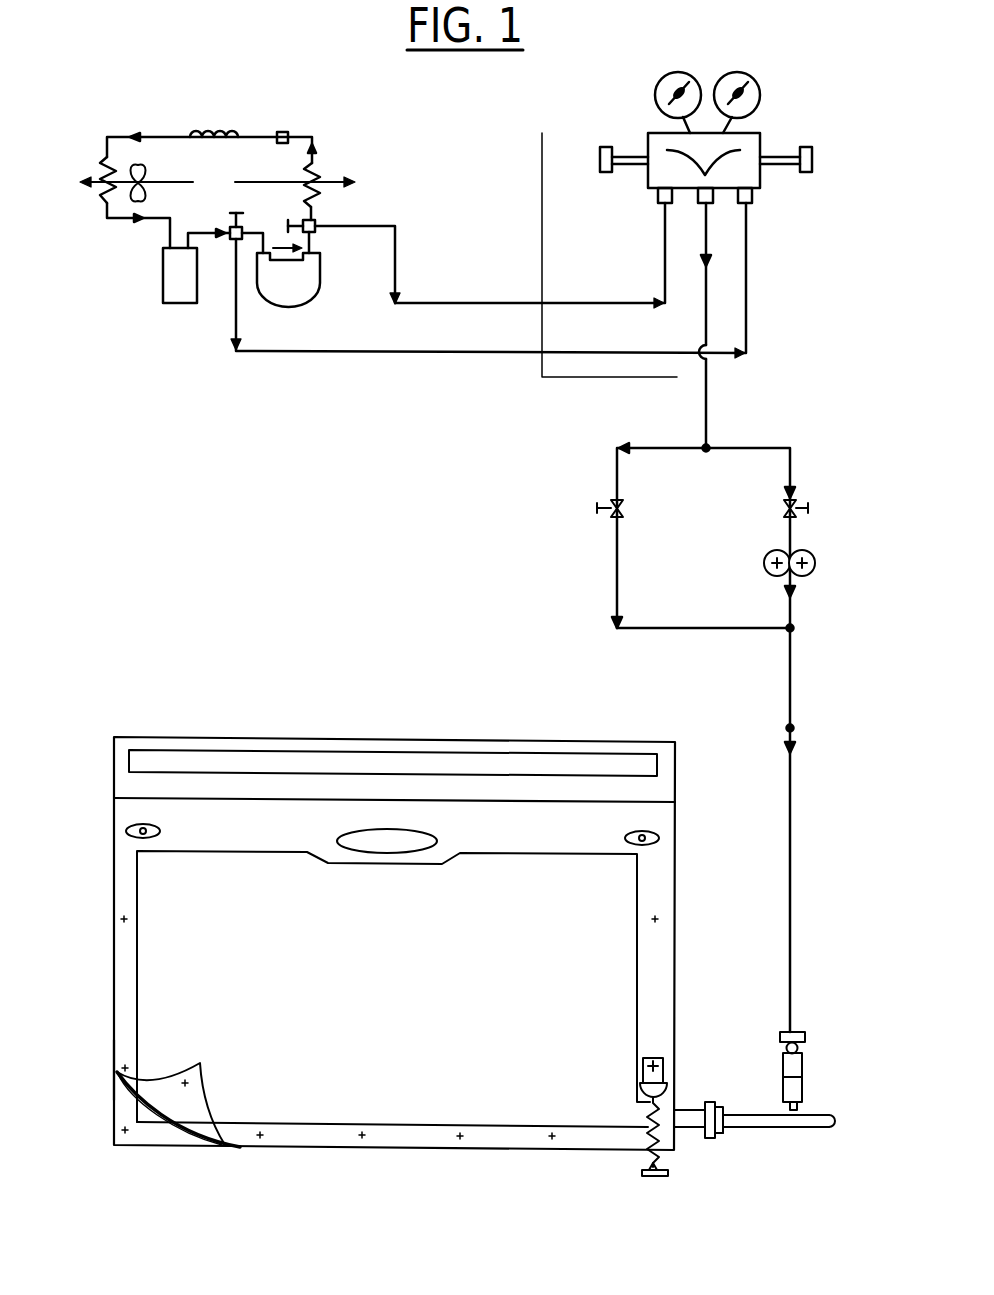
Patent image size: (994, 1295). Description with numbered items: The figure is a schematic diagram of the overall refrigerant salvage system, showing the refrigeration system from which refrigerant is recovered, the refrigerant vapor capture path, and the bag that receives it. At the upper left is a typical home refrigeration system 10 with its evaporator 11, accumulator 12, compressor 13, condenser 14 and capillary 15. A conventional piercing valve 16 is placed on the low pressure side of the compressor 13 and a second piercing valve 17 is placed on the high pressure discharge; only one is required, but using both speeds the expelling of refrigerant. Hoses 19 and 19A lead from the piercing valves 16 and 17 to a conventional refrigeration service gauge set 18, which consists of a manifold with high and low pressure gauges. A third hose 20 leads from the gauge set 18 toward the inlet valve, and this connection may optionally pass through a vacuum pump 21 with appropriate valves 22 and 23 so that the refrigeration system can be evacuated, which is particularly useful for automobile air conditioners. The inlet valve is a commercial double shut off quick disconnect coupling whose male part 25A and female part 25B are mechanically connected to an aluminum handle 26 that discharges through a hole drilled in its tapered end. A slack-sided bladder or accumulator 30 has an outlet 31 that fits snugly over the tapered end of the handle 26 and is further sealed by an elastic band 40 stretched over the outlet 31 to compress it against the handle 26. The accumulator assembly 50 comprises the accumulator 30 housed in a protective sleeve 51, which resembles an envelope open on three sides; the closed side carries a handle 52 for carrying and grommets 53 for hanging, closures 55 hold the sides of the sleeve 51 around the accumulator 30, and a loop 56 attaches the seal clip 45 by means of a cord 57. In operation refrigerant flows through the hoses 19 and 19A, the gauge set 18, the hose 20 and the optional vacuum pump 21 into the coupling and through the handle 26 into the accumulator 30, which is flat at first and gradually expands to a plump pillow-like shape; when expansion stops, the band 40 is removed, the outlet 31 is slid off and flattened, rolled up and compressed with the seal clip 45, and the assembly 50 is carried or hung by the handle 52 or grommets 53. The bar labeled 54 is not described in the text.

The refrigeration system 10 is at (114, 114).
The evaporator 11 is at (105, 150).
The accumulator 12 is at (180, 275).
The compressor 13 is at (288, 275).
The condenser 14 is at (304, 170).
The capillary 15 is at (239, 115).
The piercing valve 16 is at (233, 244).
The piercing valve 17 is at (316, 218).
The refrigeration service gauge set 18 is at (762, 188).
The hose 19 is at (488, 280).
The hose 19A is at (490, 255).
The third hose 20 is at (703, 617).
The vacuum pump 21 is at (764, 563).
The valve 22 is at (623, 508).
The valve 23 is at (784, 508).
The male part 25A is at (805, 1062).
The female part 25B is at (807, 1088).
The aluminum handle 26 is at (840, 1119).
The slack-sided accumulator 30 is at (178, 1123).
The outlet 31 is at (770, 1144).
The elastic band 40 is at (737, 1100).
The seal clip 45 is at (668, 1176).
The accumulator assembly 50 is at (374, 910).
The protective sleeve 51 is at (424, 1033).
The handle 52 is at (387, 815).
The grommets 53 is at (386, 796).
The bar 54 is at (393, 738).
The closures 55 is at (117, 1068).
The loop 56 is at (676, 1068).
The cord 57 is at (648, 1160).